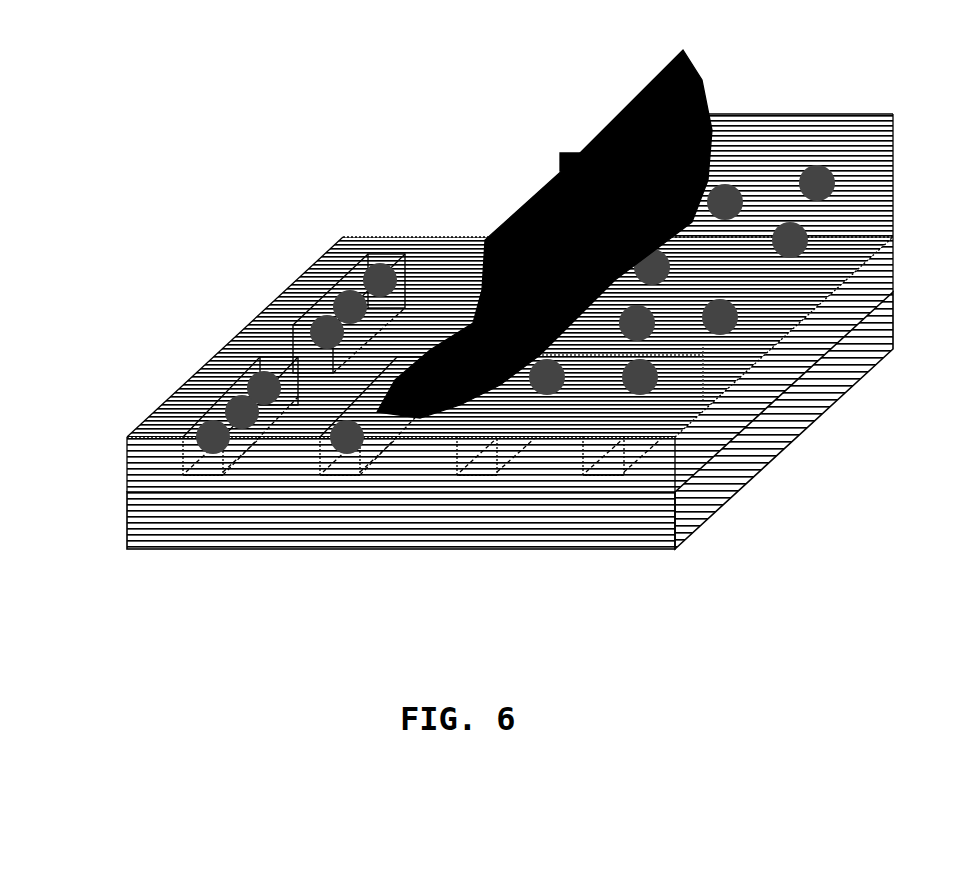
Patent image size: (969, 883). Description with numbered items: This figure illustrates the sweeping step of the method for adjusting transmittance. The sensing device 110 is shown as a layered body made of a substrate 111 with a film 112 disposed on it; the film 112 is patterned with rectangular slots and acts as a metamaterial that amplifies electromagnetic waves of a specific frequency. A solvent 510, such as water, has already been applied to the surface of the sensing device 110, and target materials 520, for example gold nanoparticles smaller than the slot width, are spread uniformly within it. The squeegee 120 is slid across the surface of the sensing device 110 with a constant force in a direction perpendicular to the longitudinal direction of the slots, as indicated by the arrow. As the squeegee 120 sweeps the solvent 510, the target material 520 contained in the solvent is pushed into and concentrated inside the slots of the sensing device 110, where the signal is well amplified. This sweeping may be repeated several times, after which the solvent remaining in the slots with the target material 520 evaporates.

The sensing device 110 is at (460, 426).
The substrate 111 is at (510, 420).
The film 112 is at (127, 482).
The squeegee 120 is at (662, 66).
The solvent 510 is at (750, 135).
The target material 520 is at (815, 166).